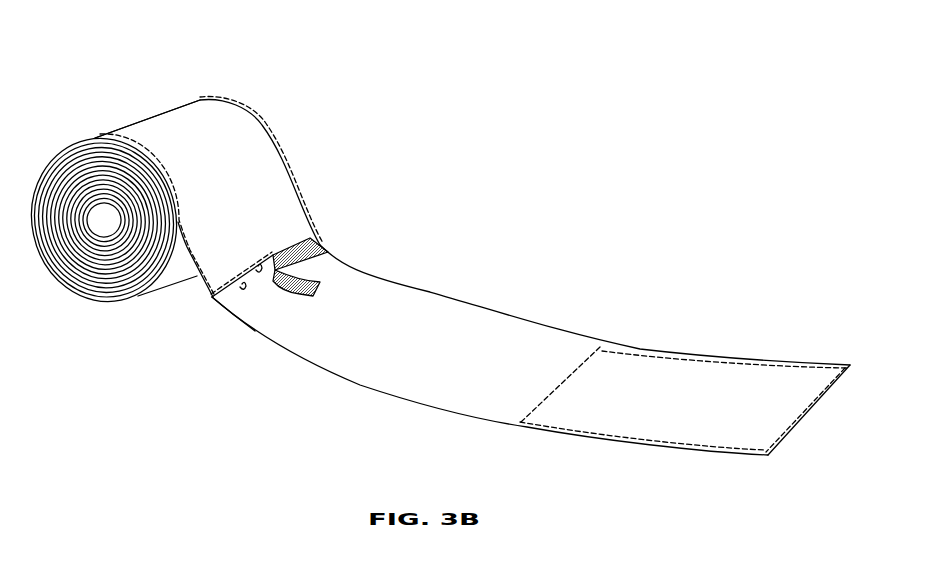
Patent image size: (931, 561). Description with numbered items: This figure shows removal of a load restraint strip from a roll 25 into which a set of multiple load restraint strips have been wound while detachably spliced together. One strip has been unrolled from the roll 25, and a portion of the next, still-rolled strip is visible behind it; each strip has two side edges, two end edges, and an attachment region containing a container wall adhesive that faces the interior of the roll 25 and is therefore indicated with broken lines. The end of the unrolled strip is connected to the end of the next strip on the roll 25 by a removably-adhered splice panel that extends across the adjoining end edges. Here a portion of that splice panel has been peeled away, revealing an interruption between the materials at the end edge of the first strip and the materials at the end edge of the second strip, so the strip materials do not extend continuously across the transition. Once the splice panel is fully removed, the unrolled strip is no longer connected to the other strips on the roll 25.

The roll 25 is at (82, 357).